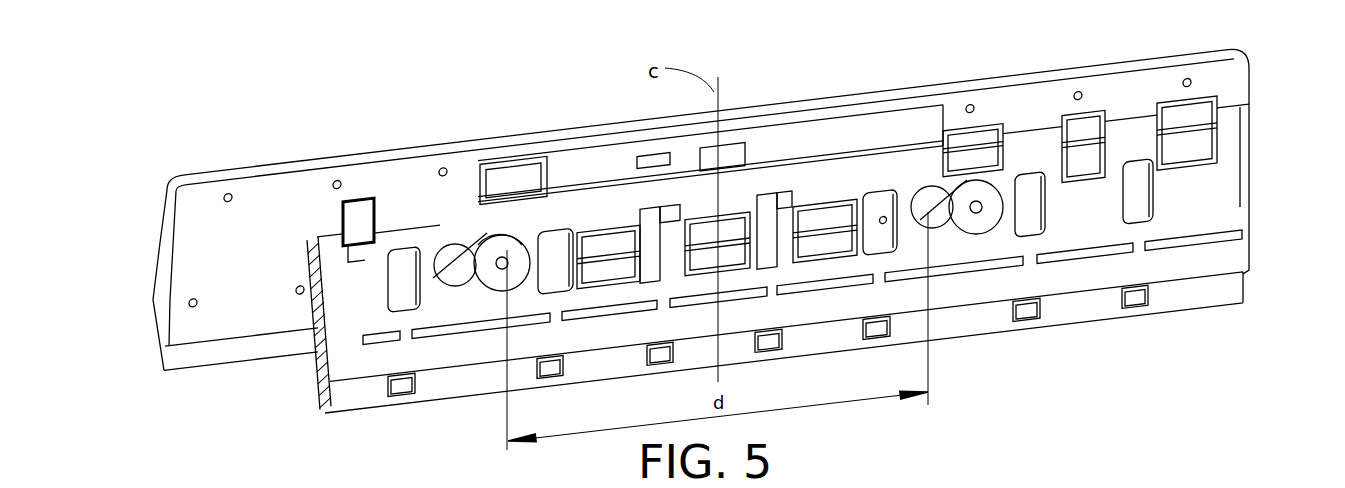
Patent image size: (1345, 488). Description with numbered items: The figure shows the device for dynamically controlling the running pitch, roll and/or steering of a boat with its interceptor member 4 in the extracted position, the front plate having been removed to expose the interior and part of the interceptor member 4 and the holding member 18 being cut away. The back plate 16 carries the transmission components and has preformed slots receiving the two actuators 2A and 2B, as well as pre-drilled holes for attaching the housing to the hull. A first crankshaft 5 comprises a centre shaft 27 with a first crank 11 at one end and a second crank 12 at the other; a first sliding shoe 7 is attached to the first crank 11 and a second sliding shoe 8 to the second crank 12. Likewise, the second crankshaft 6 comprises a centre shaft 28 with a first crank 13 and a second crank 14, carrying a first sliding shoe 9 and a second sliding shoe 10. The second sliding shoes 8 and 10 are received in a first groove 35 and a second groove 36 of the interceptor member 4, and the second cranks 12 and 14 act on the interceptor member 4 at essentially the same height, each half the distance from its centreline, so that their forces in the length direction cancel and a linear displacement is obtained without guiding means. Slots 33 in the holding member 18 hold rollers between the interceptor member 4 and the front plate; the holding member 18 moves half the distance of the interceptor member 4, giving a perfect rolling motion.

The actuator 2A is at (593, 172).
The actuator 2B is at (817, 143).
The interceptor member 4 is at (352, 392).
The first crankshaft 5 is at (503, 262).
The second crankshaft 6 is at (944, 232).
The first sliding shoe 7 is at (503, 236).
The second sliding shoe 8 is at (445, 250).
The first sliding shoe 9 is at (883, 165).
The second sliding shoe 10 is at (983, 167).
The first crank 11 is at (503, 250).
The second crank 12 is at (480, 268).
The first crank 13 is at (923, 173).
The second crank 14 is at (957, 210).
The back plate 16 is at (1243, 143).
The holding member 18 is at (1200, 200).
The centre shaft 27 is at (505, 232).
The centre shaft 28 is at (937, 173).
The slot 33 is at (1100, 253).
The first groove 35 is at (435, 252).
The second groove 36 is at (957, 215).